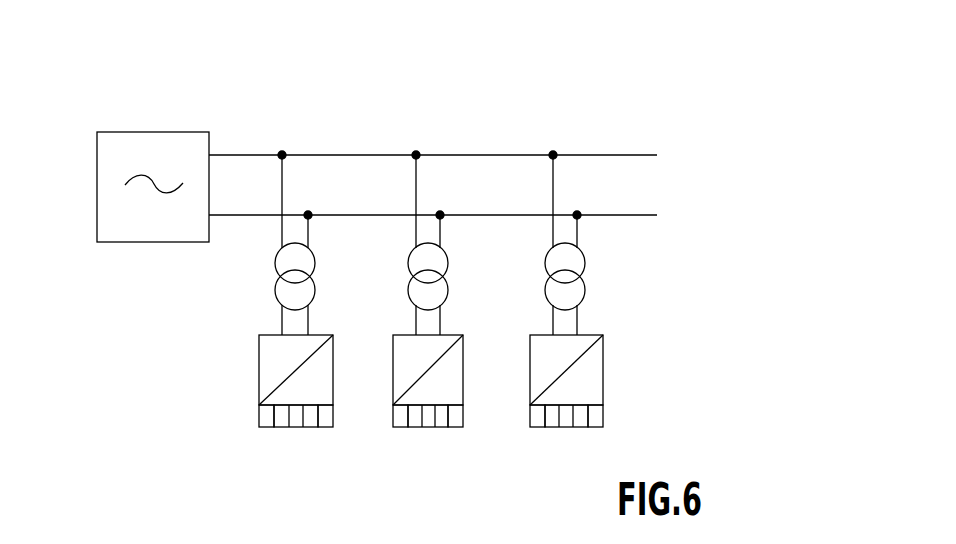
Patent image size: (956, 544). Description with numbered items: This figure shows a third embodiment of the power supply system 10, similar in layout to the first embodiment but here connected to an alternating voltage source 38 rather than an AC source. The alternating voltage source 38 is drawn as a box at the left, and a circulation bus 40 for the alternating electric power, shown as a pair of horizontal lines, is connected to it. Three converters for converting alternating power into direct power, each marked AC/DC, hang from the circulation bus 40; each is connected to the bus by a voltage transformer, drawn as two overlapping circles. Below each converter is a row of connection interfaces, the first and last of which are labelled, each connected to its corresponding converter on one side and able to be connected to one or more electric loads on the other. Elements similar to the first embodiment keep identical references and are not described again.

The power supply system 10 is at (645, 128).
The alternating voltage source 38 is at (168, 132).
The circulation bus 40 is at (495, 155).